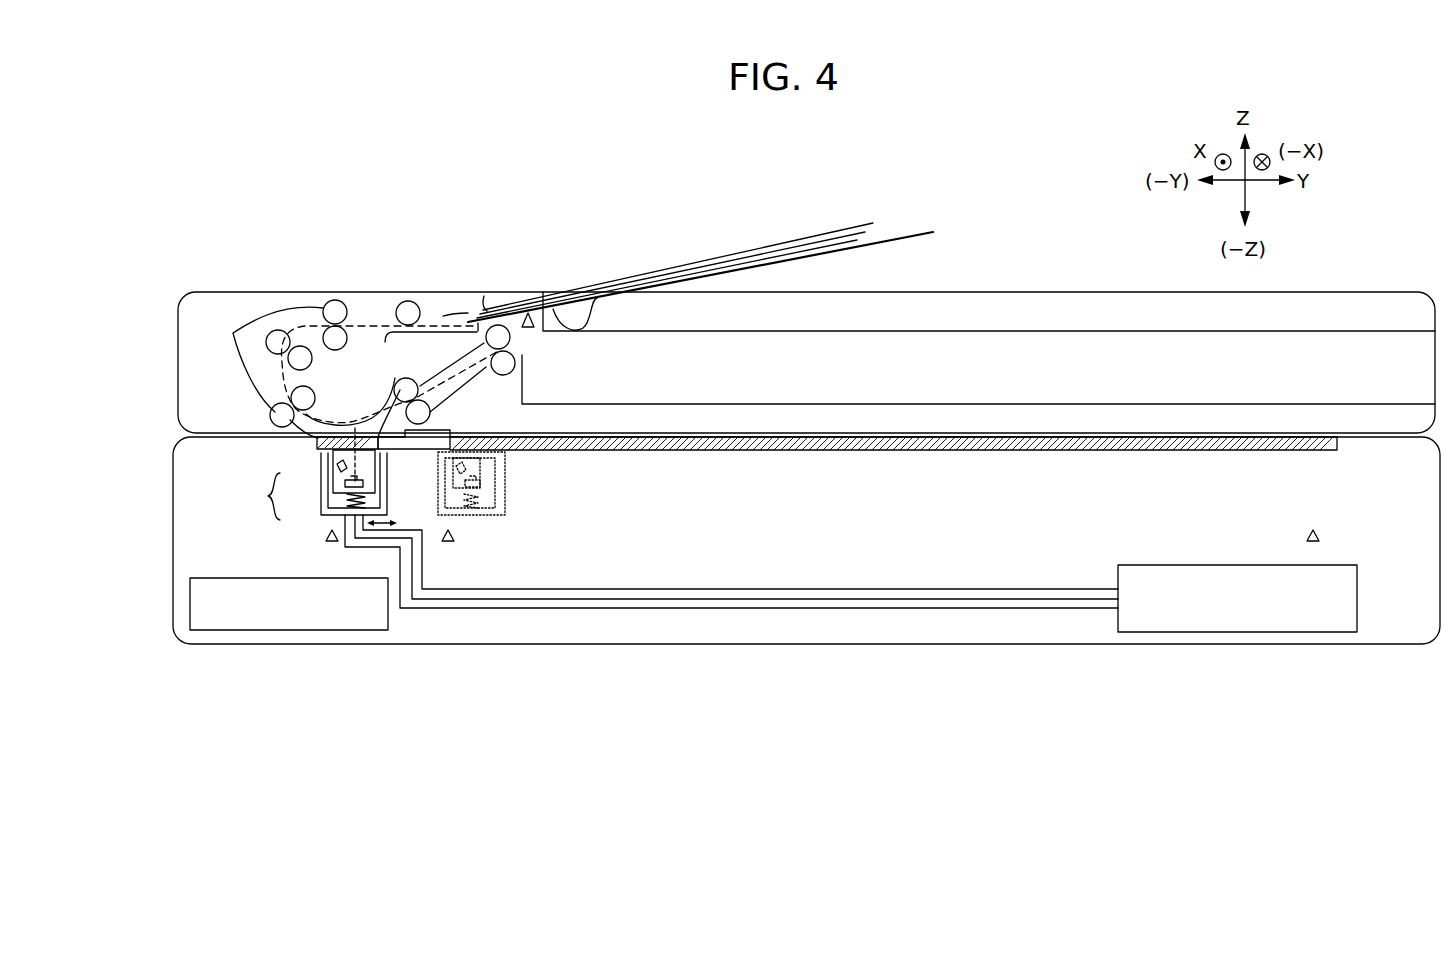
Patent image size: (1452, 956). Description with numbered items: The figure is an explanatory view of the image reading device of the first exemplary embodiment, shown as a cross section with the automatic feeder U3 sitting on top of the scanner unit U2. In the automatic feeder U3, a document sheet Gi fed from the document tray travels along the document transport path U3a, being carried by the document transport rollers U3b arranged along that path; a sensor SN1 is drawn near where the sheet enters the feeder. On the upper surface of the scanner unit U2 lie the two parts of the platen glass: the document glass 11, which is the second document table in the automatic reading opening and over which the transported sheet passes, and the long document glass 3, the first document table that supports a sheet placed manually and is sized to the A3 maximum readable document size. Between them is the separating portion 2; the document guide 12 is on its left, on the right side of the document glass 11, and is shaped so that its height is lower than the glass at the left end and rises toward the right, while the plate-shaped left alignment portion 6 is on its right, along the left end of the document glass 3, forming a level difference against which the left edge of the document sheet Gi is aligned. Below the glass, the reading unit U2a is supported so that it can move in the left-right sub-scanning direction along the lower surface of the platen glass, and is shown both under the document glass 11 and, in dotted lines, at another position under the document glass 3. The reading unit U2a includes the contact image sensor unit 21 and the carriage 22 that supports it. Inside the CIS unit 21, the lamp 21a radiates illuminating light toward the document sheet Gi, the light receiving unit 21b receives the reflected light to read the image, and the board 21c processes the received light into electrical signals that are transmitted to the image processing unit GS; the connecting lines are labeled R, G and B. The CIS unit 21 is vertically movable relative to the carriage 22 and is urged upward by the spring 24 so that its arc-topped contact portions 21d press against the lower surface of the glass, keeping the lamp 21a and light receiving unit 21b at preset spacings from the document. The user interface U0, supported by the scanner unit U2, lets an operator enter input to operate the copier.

The automatic feeder U3 is at (154, 356).
The document transport path U3a is at (353, 327).
The document transport rollers U3b is at (255, 372).
The document sheet Gi is at (653, 266).
The document guide 12 is at (394, 410).
The separating portion 2 is at (378, 410).
The contact portions 21d is at (336, 450).
The left alignment portion 6 is at (443, 432).
The sheet sensor SN1 is at (530, 328).
The scanner unit U2 is at (154, 505).
The document glass 11 is at (318, 441).
The document glass 3 is at (1260, 451).
The contact image sensor unit 21 is at (356, 485).
The lamp 21a is at (346, 467).
The light receiving unit 21b is at (362, 481).
The board 21c is at (376, 495).
The carriage 22 is at (326, 503).
The reading unit U2a is at (556, 478).
The spring 24 is at (700, 596).
The user interface U0 is at (237, 585).
The image processing unit GS is at (1235, 572).
The red signal line R is at (1036, 589).
The green signal line G is at (1020, 600).
The blue signal line B is at (1078, 609).